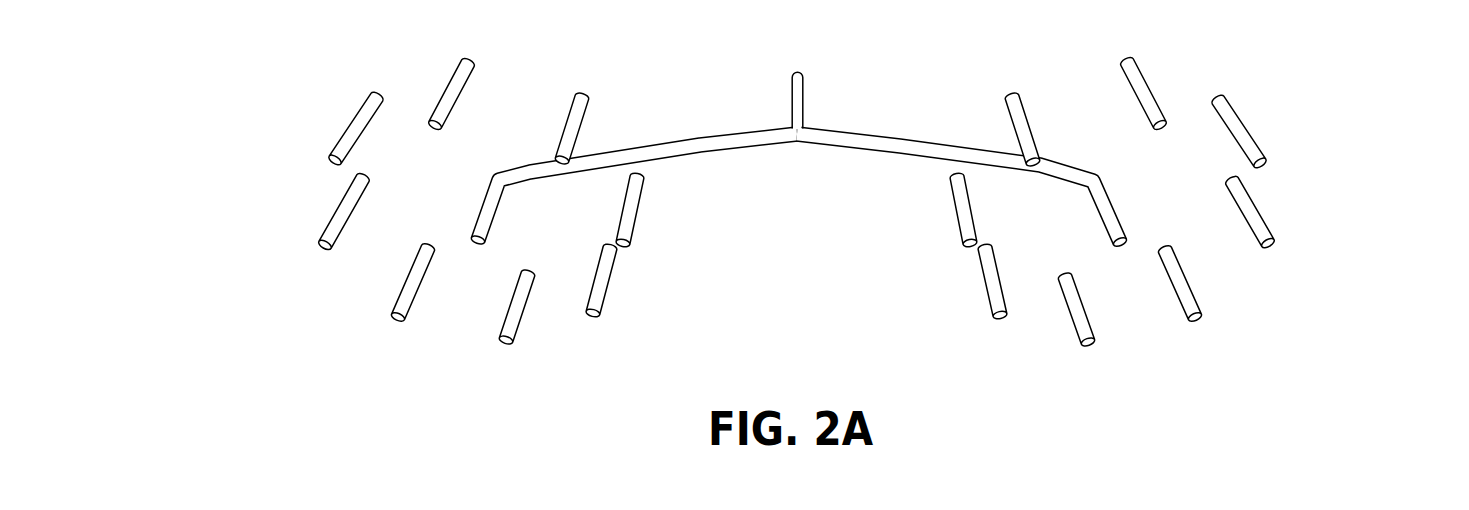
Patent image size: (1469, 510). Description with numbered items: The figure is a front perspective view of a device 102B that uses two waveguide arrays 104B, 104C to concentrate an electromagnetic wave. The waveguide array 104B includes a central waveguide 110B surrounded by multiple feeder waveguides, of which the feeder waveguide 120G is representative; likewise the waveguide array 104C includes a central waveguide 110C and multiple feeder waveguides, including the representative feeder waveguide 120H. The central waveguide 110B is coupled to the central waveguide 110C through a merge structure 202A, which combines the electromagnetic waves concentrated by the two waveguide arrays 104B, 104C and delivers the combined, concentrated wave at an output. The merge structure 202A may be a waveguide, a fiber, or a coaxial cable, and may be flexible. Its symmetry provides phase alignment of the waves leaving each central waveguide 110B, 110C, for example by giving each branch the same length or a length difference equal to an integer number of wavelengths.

The device 102B is at (248, 101).
The waveguide array 104B is at (355, 267).
The waveguide array 104C is at (1187, 270).
The central waveguide 110B is at (479, 212).
The central waveguide 110C is at (1115, 211).
The feeder waveguide 120G is at (218, 211).
The feeder waveguide 120H is at (1330, 206).
The merge structure 202A is at (825, 129).